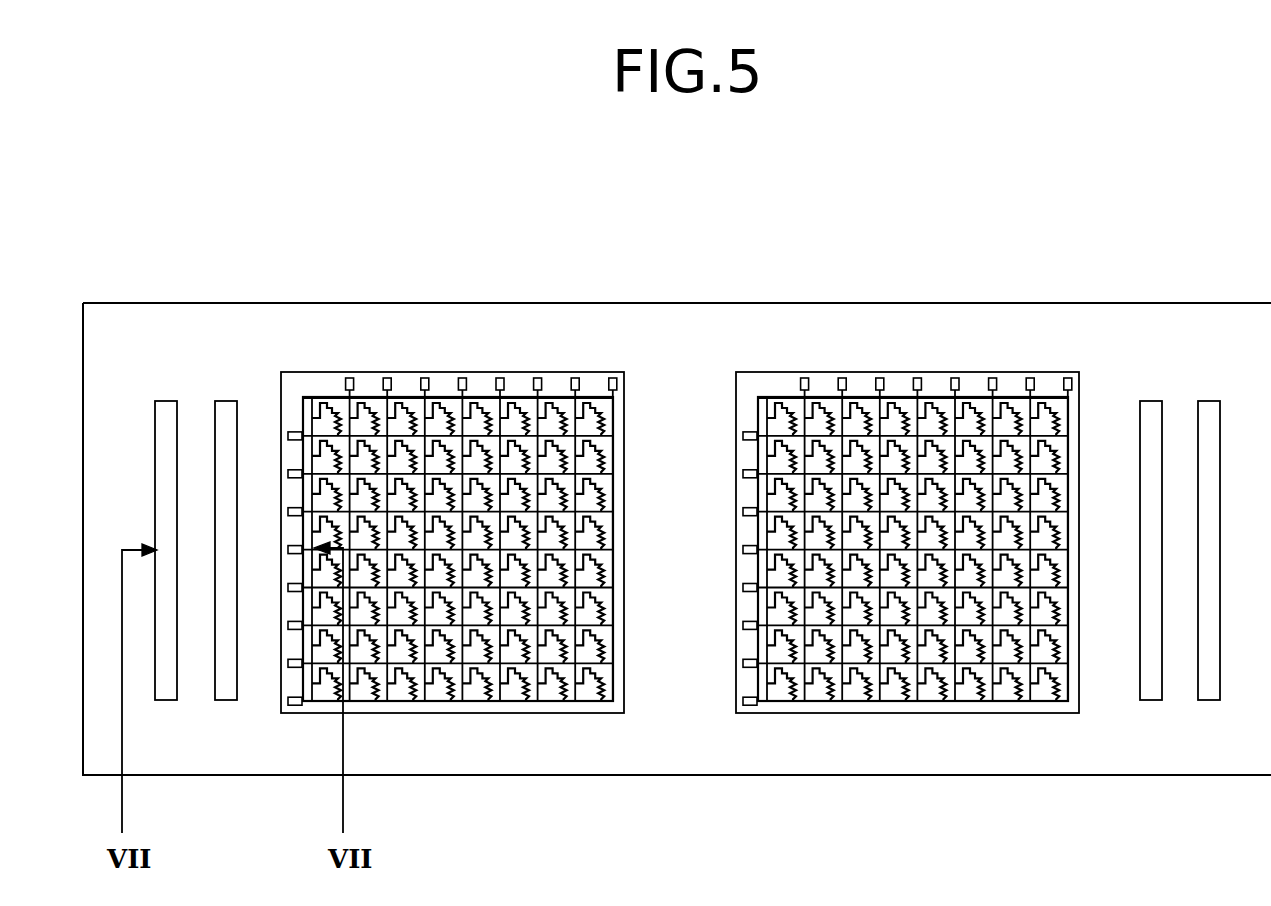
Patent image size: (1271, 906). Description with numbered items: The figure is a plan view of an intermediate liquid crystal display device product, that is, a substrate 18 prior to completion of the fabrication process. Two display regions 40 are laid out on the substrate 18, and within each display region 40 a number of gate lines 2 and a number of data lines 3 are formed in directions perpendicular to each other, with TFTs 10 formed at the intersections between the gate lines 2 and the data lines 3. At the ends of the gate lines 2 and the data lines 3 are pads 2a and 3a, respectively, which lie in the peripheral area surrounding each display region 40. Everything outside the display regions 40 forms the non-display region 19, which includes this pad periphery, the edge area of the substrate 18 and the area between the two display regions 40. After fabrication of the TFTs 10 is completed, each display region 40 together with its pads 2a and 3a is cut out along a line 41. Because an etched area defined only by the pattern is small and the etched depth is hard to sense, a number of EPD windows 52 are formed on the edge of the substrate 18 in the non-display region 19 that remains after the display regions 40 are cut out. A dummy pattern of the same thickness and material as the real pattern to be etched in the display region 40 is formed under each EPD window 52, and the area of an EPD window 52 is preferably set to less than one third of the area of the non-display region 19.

The gate line 2 is at (383, 663).
The pad 2a is at (295, 430).
The data line 3 is at (503, 688).
The pad 3a is at (462, 383).
The TFT 10 is at (335, 400).
The substrate 18 is at (1038, 302).
The non-display region 19 is at (612, 335).
The display region 40 is at (748, 458).
The line 41 is at (757, 372).
The EPD window 52 is at (217, 398).